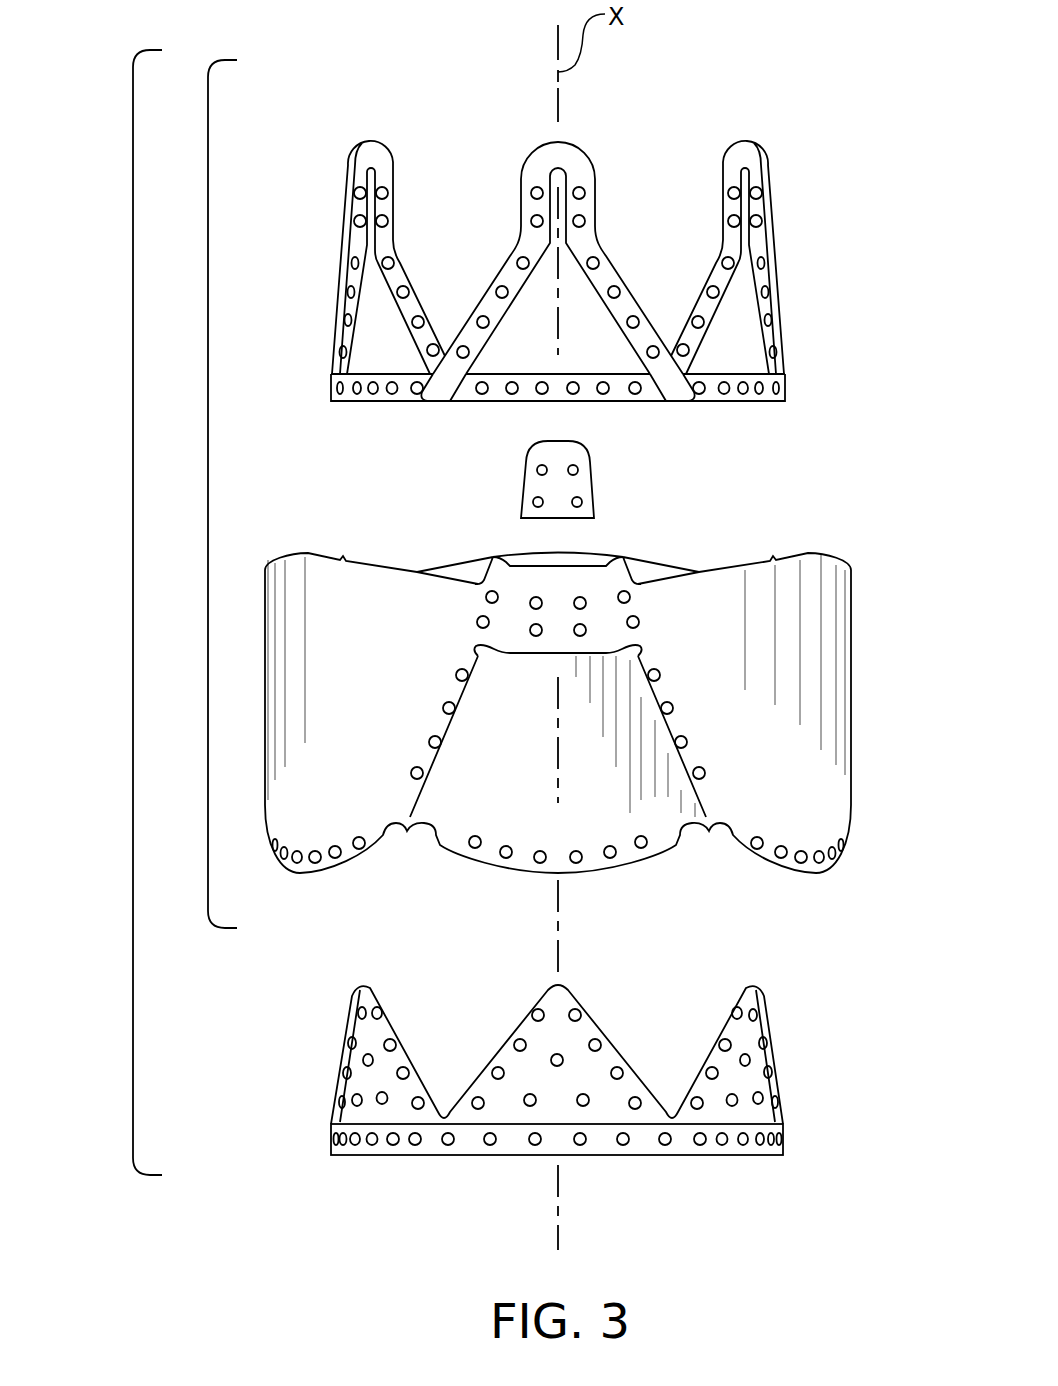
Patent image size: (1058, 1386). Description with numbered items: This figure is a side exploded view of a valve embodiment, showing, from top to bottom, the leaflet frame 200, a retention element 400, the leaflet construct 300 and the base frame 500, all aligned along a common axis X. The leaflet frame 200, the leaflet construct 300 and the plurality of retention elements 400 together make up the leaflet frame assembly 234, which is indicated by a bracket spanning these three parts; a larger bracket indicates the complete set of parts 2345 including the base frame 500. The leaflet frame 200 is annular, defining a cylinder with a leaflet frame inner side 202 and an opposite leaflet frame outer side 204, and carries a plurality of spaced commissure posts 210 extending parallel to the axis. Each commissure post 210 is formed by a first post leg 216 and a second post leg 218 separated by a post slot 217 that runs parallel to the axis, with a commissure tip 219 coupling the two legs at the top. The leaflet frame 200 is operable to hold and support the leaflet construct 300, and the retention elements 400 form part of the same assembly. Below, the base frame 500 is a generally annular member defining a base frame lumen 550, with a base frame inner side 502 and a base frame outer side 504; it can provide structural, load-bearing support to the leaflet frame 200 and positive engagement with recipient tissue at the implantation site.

The leaflet frame 200 is at (602, 252).
The leaflet frame inner side 202 is at (385, 243).
The leaflet frame outer side 204 is at (438, 386).
The commissure post 210 is at (516, 252).
The first post leg 216 is at (598, 172).
The post slot 217 is at (566, 262).
The second post leg 218 is at (519, 178).
The commissure tip 219 is at (400, 223).
The leaflet frame assembly 234 is at (208, 663).
The complete valve assembly 2345 is at (133, 717).
The leaflet construct 300 is at (854, 634).
The retention element 400 is at (592, 484).
The base frame 500 is at (553, 1062).
The base frame inner side 502 is at (373, 1077).
The base frame outer side 504 is at (512, 1122).
The base frame lumen 550 is at (441, 1022).